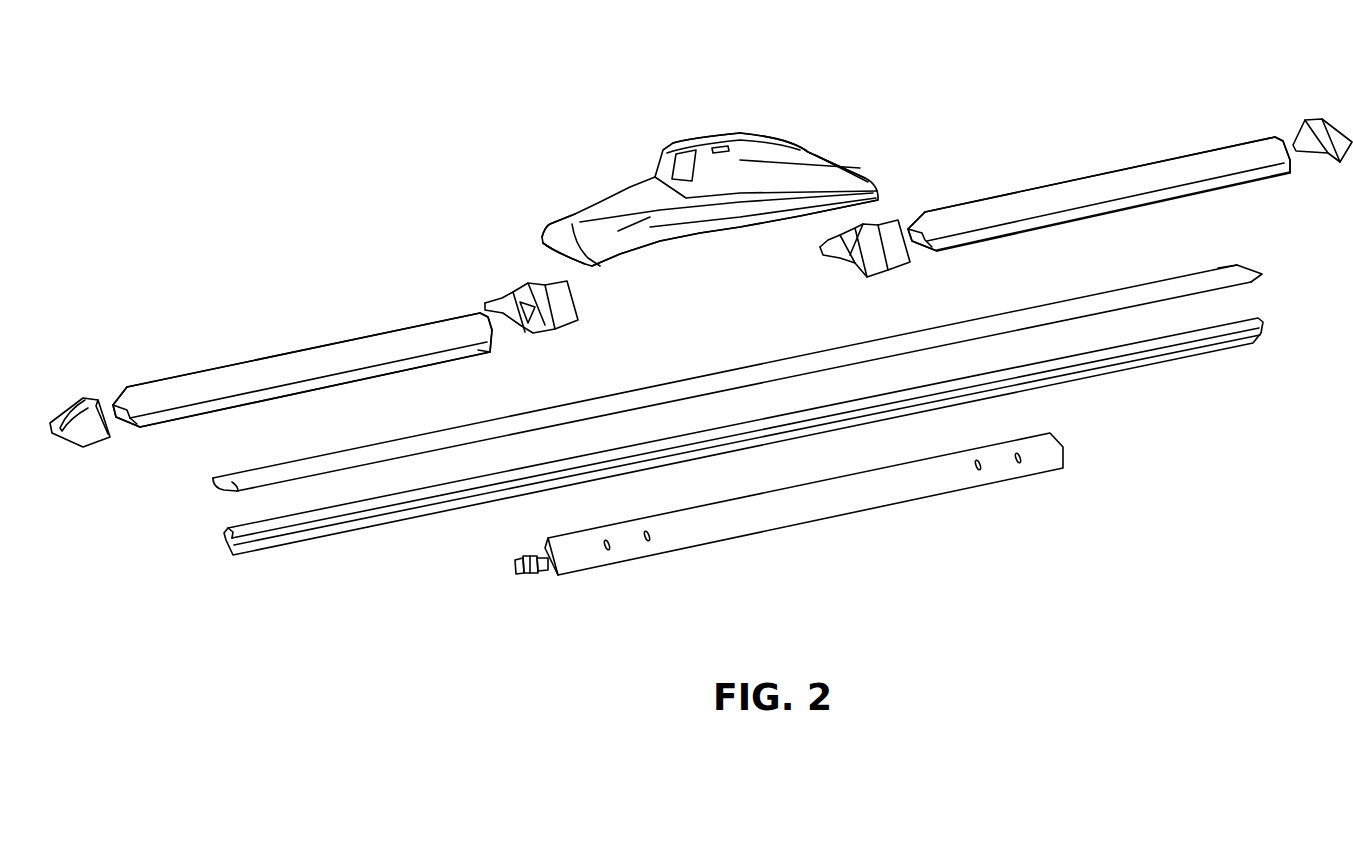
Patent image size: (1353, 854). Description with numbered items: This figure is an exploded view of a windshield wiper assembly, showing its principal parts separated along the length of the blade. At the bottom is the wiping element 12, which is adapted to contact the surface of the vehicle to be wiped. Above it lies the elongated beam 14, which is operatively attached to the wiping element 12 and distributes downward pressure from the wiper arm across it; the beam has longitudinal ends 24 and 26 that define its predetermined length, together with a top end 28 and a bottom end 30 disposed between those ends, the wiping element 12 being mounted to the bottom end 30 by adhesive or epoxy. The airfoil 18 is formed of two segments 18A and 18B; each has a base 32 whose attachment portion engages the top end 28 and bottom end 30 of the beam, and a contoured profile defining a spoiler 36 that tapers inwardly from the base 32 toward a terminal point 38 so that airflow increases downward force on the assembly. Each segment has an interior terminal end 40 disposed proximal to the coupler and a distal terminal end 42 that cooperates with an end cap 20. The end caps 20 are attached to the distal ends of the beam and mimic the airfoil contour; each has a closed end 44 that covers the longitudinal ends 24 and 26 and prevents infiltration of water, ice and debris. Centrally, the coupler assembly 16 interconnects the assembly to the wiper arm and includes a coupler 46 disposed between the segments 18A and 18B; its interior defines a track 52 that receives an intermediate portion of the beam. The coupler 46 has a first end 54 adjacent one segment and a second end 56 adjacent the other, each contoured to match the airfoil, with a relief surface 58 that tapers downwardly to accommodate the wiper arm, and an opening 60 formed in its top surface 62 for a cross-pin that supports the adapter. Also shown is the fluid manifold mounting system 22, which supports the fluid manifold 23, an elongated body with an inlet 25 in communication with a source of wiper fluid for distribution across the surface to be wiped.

The wiping element 12 is at (348, 543).
The elongated beam 14 is at (1260, 262).
The coupler assembly 16 is at (803, 134).
The airfoil 18 is at (1099, 161).
The airfoil segment 18A is at (240, 372).
The airfoil segment 18B is at (1193, 165).
The end caps 20 is at (80, 405).
The fluid manifold mounting system 22 is at (483, 300).
The fluid manifold 23 is at (802, 510).
The longitudinal end 24 is at (761, 343).
The inlet 25 is at (515, 568).
The longitudinal end 26 is at (1248, 274).
The top end 28 is at (706, 366).
The bottom end 30 is at (948, 333).
The base 32 is at (222, 408).
The spoiler 36 is at (328, 352).
The terminal point 38 is at (394, 320).
The interior terminal ends 40 is at (456, 340).
The distal terminal ends 42 is at (118, 398).
The closed end 44 is at (78, 445).
The coupler 46 is at (645, 177).
The track 52 is at (659, 249).
The first end 54 is at (566, 222).
The second end 56 is at (842, 162).
The relief surface 58 is at (604, 214).
The opening 60 is at (705, 146).
The top surface 62 is at (747, 140).